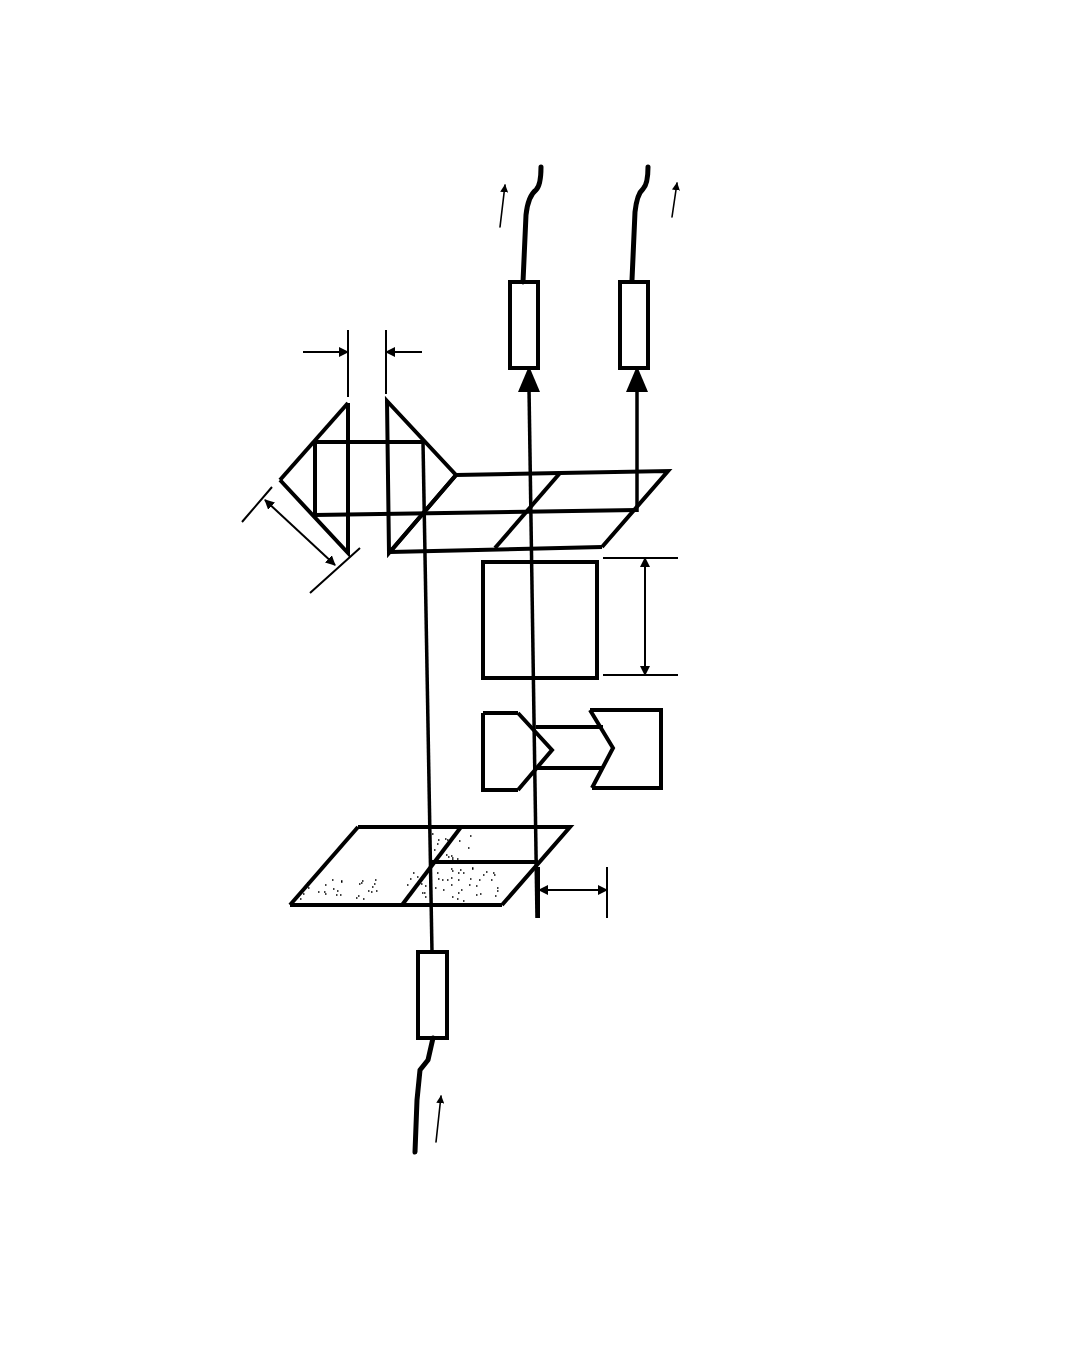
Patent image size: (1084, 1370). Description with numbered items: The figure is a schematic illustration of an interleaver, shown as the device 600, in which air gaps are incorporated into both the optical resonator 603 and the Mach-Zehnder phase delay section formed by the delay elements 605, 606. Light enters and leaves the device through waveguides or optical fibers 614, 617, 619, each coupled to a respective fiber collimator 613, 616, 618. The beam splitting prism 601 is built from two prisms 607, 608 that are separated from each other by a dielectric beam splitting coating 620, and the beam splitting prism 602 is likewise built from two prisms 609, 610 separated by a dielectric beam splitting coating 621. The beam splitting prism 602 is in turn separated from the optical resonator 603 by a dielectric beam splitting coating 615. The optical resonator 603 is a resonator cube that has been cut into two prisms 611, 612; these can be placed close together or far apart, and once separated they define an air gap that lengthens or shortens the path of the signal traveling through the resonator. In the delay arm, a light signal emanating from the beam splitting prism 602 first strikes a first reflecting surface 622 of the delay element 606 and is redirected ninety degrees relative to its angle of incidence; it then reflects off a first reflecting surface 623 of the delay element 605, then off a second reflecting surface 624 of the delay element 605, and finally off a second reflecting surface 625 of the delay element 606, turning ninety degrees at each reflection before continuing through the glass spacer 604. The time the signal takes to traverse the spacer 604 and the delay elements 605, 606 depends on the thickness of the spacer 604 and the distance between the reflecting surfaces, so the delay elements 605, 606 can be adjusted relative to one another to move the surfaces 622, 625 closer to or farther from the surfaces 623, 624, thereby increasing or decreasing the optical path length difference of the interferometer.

The device 600 is at (215, 265).
The beam splitting prism 601 is at (490, 902).
The beam splitting prism 602 is at (660, 482).
The optical resonator 603 is at (332, 435).
The spacer 604 is at (585, 680).
The delay element 605 is at (663, 741).
The delay element 606 is at (483, 772).
The prism 607 is at (313, 877).
The prism 608 is at (478, 930).
The prism 609 is at (495, 466).
The prism 610 is at (622, 530).
The prism 611 is at (442, 455).
The prism 612 is at (293, 460).
The fiber collimator 613 is at (418, 995).
The optical fiber 614 is at (413, 1112).
The dielectric beam splitting coating 615 is at (408, 555).
The fiber collimator 616 is at (508, 313).
The optical fiber 617 is at (528, 245).
The fiber collimator 618 is at (648, 315).
The optical fiber 619 is at (637, 247).
The dielectric beam splitting coating 620 is at (400, 883).
The dielectric beam splitting coating 621 is at (543, 475).
The first reflecting surface 622 is at (527, 790).
The first reflecting surface 623 is at (583, 780).
The second reflecting surface 624 is at (582, 707).
The second reflecting surface 625 is at (530, 713).